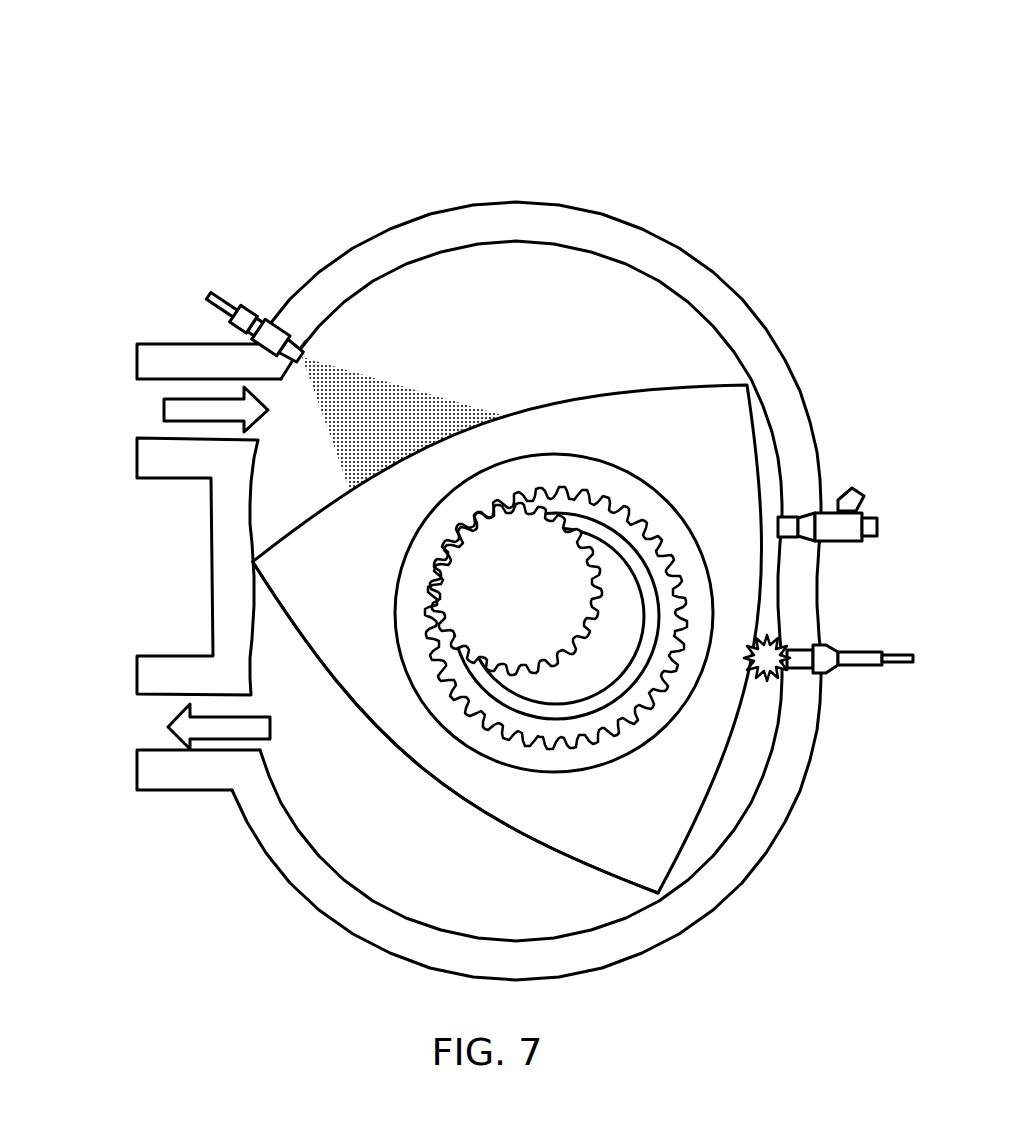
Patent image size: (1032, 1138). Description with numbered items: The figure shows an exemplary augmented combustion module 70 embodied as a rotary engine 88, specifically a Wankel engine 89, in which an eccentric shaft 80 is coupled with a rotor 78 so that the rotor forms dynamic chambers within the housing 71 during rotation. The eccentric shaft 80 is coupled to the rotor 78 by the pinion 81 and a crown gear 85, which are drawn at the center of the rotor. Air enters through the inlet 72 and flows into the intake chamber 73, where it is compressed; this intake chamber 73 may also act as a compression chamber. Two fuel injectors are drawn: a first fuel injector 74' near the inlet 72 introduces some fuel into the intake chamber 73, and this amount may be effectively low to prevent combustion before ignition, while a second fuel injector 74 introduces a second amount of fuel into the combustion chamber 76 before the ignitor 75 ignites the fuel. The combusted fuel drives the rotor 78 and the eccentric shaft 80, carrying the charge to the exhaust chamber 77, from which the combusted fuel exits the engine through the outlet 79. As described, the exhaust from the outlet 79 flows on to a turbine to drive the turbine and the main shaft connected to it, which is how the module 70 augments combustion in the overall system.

The augmented combustion module 70 is at (386, 146).
The housing 71 is at (325, 307).
The inlet 72 is at (177, 412).
The intake chamber 73 is at (500, 305).
The fuel injector 74 is at (827, 481).
The first fuel injector 74' is at (227, 286).
The ignitor 75 is at (835, 668).
The combustion chamber 76 is at (775, 633).
The exhaust chamber 77 is at (363, 810).
The rotor 78 is at (686, 425).
The outlet 79 is at (160, 725).
The eccentric shaft 80 is at (527, 565).
The pinion 81 is at (432, 612).
The crown gear 85 is at (630, 527).
The rotary engine 88 is at (583, 245).
The Wankel engine 89 is at (657, 262).